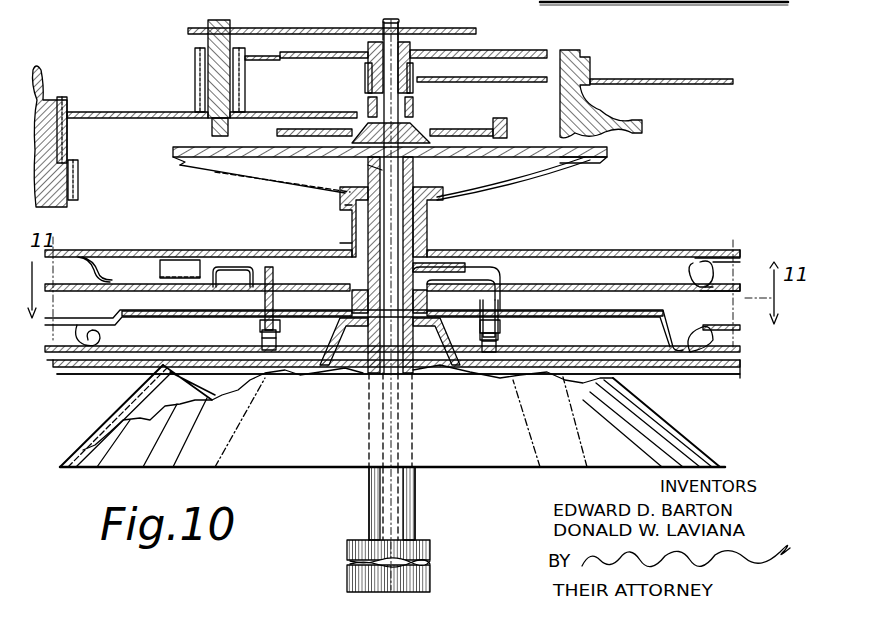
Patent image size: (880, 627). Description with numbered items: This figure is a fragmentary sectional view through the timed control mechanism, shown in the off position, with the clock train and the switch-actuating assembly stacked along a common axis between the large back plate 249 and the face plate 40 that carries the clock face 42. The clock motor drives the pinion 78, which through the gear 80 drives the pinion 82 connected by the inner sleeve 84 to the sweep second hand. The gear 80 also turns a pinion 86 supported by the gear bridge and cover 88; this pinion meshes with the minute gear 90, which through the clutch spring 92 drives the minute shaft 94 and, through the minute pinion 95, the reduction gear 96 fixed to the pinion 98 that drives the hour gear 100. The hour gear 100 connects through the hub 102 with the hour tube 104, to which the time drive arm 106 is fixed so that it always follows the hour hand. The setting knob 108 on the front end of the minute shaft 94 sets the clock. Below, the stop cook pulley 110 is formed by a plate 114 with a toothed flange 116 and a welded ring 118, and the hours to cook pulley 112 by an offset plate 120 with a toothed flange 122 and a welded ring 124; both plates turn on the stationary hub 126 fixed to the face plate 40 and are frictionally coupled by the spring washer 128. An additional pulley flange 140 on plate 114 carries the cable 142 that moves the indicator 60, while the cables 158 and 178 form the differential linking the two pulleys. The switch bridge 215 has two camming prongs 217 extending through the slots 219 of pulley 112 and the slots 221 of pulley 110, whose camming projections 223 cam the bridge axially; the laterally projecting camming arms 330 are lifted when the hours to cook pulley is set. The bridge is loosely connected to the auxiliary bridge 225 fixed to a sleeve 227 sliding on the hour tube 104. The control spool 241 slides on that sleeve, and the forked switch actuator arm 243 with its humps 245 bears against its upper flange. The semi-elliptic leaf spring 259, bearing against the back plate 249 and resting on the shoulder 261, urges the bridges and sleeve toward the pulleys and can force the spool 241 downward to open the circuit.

The face plate 40 is at (86, 0).
The clock face 42 is at (720, 463).
The indicator 60 is at (636, 3).
The pinion 78 is at (70, 182).
The gear 80 is at (97, 112).
The pinion 82 is at (413, 103).
The inner sleeve 84 is at (383, 400).
The pinion 86 is at (195, 60).
The gear bridge and cover 88 is at (476, 31).
The minute gear 90 is at (298, 60).
The clutch spring 92 is at (482, 52).
The minute shaft 94 is at (390, 21).
The minute pinion 95 is at (348, 58).
The reduction gear 96 is at (722, 67).
The pinion 98 is at (642, 123).
The hour gear 100 is at (482, 130).
The hub 102 is at (363, 127).
The hour tube 104 is at (410, 172).
The time drive arm 106 is at (467, 272).
The setting knob 108 is at (430, 548).
The stop cook pulley 110 is at (742, 328).
The hours to cook pulley 112 is at (693, 263).
The plate 114 is at (120, 325).
The toothed flange 116 is at (53, 320).
The ring 118 is at (47, 360).
The plate 120 is at (625, 290).
The toothed flange 122 is at (740, 280).
The ring 124 is at (737, 277).
The stationary hub 126 is at (352, 360).
The spring washer 128 is at (447, 300).
The pulley flange 140 is at (560, 300).
The cable 142 is at (593, 310).
The cable 158 is at (710, 257).
The second cable 178 is at (713, 370).
The switch bridge 215 is at (273, 267).
The camming prongs 217 is at (272, 330).
The slots 219 is at (233, 267).
The slots 221 is at (268, 335).
The camming projections 223 is at (500, 327).
The auxiliary bridge 225 is at (352, 240).
The sleeve 227 is at (352, 212).
The control spool 241 is at (265, 184).
The switch actuator arm 243 is at (500, 190).
The humps 245 is at (375, 172).
The back plate 249 is at (185, 146).
The semi-elliptic leaf spring 259 is at (590, 163).
The shoulder 261 is at (240, 174).
The camming arms 330 is at (173, 260).